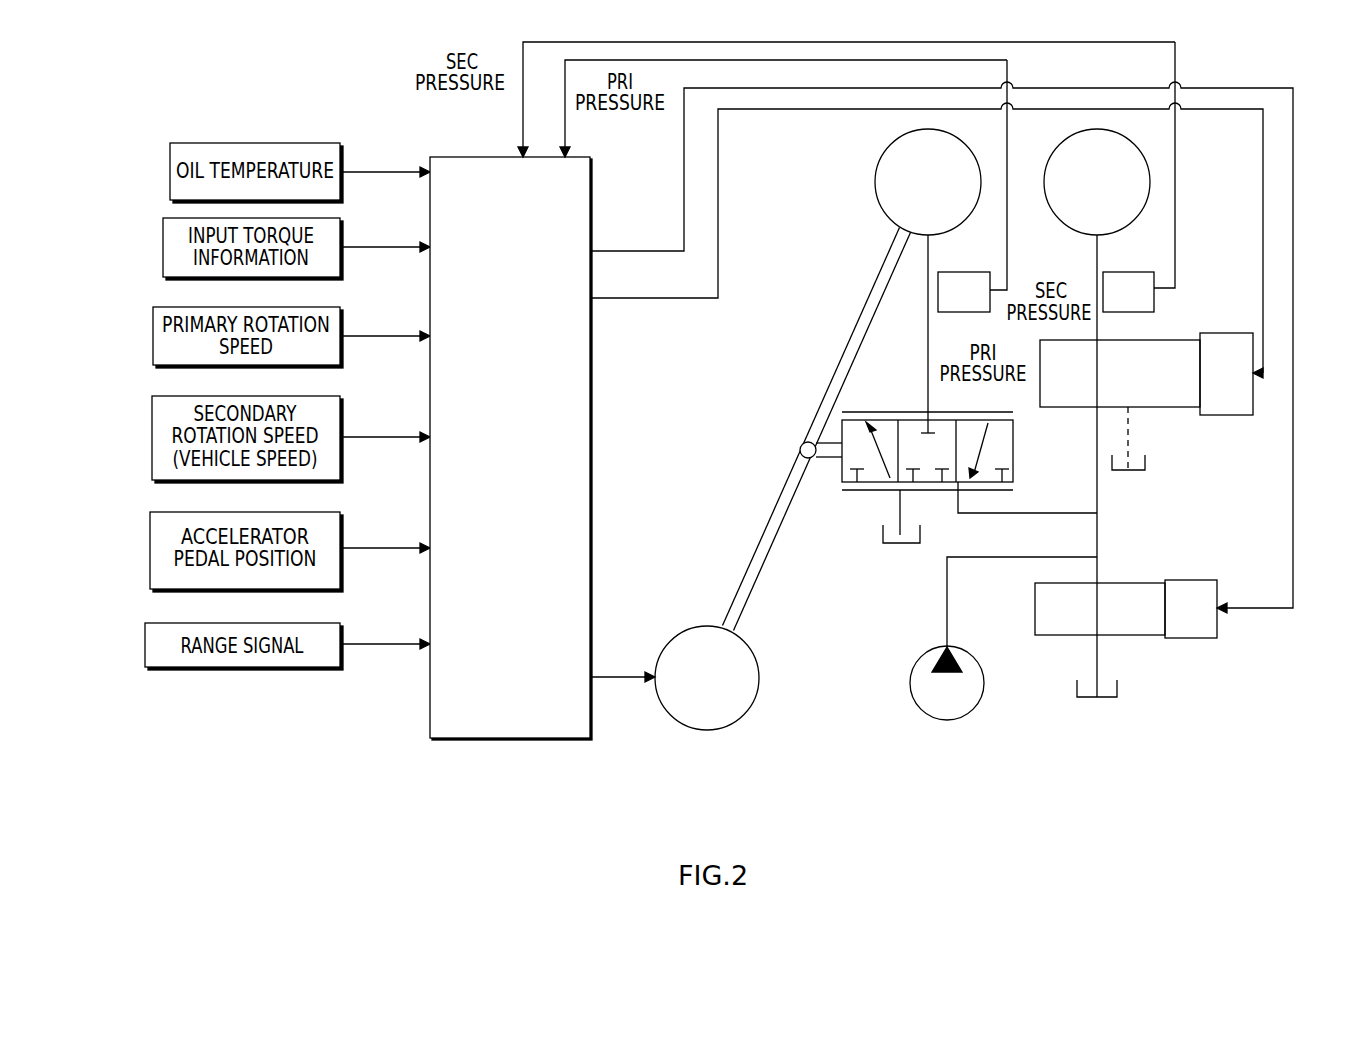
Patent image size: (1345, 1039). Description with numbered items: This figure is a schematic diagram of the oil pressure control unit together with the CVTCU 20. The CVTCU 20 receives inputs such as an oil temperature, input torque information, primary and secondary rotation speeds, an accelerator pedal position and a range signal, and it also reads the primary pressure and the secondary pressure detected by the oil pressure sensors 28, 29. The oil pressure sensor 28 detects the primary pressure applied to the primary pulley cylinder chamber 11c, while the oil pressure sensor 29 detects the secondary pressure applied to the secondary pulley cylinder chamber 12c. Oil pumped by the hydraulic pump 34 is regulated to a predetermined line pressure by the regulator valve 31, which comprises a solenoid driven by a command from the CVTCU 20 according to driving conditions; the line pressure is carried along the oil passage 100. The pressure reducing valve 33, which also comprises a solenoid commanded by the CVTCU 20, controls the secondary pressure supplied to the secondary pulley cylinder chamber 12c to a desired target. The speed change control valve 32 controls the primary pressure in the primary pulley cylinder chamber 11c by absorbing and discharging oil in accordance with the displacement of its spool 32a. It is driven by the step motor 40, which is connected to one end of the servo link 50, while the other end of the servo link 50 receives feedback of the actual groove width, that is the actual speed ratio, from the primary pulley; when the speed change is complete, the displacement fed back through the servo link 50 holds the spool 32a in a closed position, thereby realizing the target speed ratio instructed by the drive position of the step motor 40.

The CVTCU 20 is at (511, 434).
The primary pulley cylinder chamber 11c is at (876, 194).
The secondary pulley cylinder chamber 12c is at (1049, 207).
The oil pressure sensor 28 is at (952, 312).
The oil pressure sensor 29 is at (1132, 312).
The speed change control valve 32 is at (845, 502).
The spool 32a is at (1014, 440).
The servo link 50 is at (773, 507).
The step motor 40 is at (759, 688).
The pressure reducing valve 33 is at (1140, 418).
The regulator valve 31 is at (1130, 645).
The hydraulic pump 34 is at (972, 710).
The line pressure oil passage 100 is at (1097, 533).